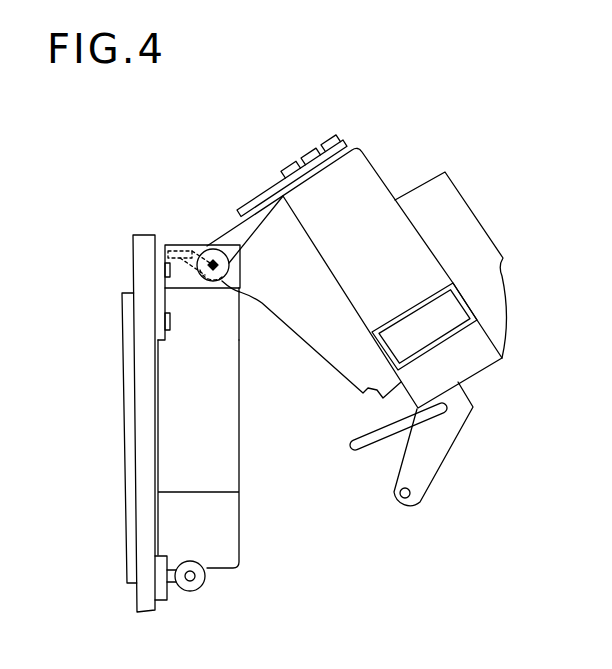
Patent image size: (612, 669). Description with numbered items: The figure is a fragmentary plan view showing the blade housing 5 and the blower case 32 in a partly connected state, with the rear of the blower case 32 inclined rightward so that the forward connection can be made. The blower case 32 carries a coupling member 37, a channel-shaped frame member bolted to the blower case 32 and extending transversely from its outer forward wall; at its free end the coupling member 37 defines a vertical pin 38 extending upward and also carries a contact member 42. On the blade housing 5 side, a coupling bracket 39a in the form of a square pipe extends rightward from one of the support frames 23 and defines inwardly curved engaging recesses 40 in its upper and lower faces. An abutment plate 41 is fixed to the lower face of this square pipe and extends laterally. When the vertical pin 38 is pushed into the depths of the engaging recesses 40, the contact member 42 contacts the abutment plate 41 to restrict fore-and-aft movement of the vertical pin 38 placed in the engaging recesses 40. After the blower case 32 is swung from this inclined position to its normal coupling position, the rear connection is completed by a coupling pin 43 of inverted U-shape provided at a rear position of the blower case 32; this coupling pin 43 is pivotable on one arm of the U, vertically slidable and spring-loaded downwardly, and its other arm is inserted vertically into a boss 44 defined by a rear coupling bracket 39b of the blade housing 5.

The blade housing 5 is at (126, 293).
The support frame 23 is at (145, 472).
The blower case 32 is at (347, 372).
The coupling member 37 is at (268, 210).
The vertical pin 38 is at (207, 247).
The coupling bracket 39a is at (240, 323).
The coupling bracket 39b is at (167, 594).
The engaging recesses 40 is at (232, 264).
The abutment plate 41 is at (178, 243).
The contact member 42 is at (189, 268).
The coupling pin 43 is at (373, 448).
The boss 44 is at (207, 577).